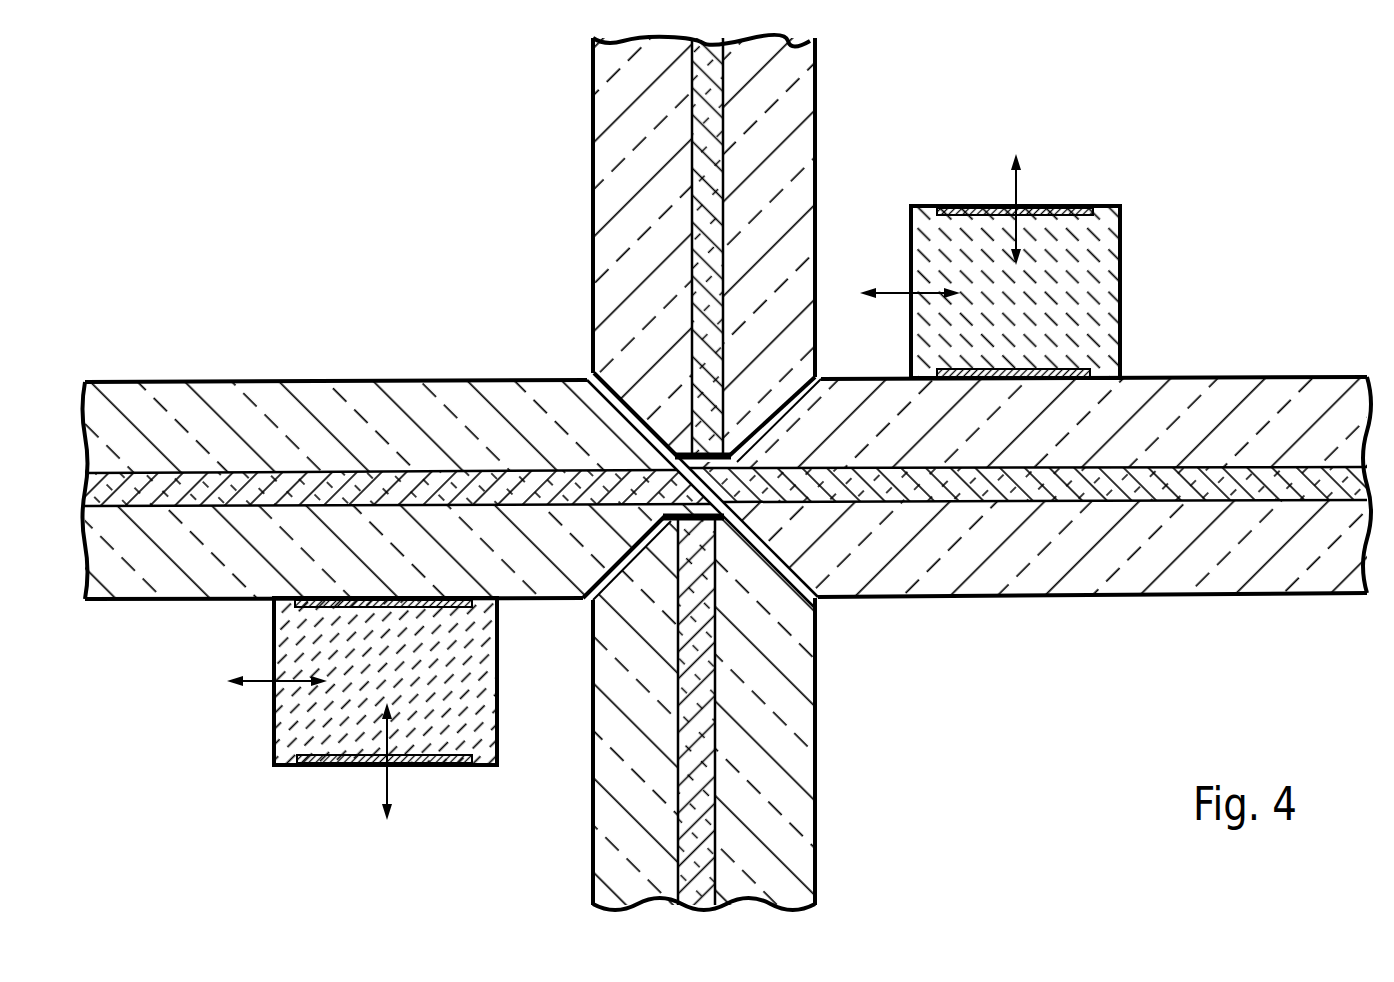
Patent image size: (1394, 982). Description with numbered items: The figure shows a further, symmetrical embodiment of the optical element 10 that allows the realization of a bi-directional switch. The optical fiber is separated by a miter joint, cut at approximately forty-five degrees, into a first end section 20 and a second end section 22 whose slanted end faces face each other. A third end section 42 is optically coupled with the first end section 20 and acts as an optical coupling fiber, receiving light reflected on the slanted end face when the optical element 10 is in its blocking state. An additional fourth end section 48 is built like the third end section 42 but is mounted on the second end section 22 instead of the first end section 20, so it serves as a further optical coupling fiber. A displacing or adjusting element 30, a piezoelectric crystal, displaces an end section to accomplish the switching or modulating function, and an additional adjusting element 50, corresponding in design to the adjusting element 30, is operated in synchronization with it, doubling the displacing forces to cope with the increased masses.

The optical element 10 is at (997, 744).
The first end section 20 is at (152, 565).
The second end section 22 is at (1030, 548).
The adjusting element 30 is at (1078, 285).
The third end section 42 is at (782, 801).
The fourth end section 48 is at (612, 196).
The adjusting element 50 is at (313, 722).